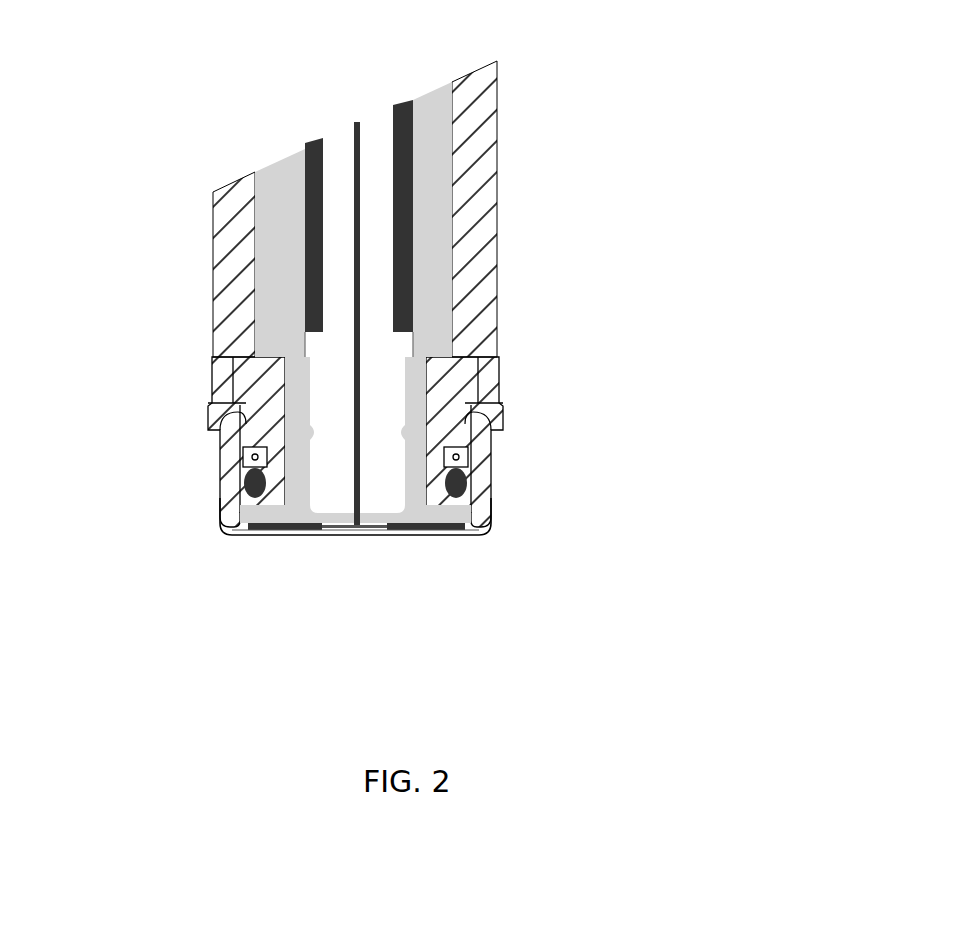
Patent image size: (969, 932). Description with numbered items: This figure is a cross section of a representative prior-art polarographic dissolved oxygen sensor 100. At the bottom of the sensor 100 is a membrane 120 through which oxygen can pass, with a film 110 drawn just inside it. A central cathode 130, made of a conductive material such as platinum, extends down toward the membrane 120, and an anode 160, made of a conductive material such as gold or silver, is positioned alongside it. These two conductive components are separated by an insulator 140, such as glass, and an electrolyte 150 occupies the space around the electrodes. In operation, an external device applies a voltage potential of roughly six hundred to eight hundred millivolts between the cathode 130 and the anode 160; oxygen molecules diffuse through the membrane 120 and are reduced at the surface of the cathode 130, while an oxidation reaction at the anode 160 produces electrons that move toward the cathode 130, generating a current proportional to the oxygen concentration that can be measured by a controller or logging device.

The sensor 100 is at (207, 101).
The film 110 is at (301, 568).
The membrane 120 is at (511, 537).
The cathode 130 is at (561, 325).
The insulator 140 is at (506, 417).
The electrolyte 150 is at (522, 219).
The anode 160 is at (533, 216).